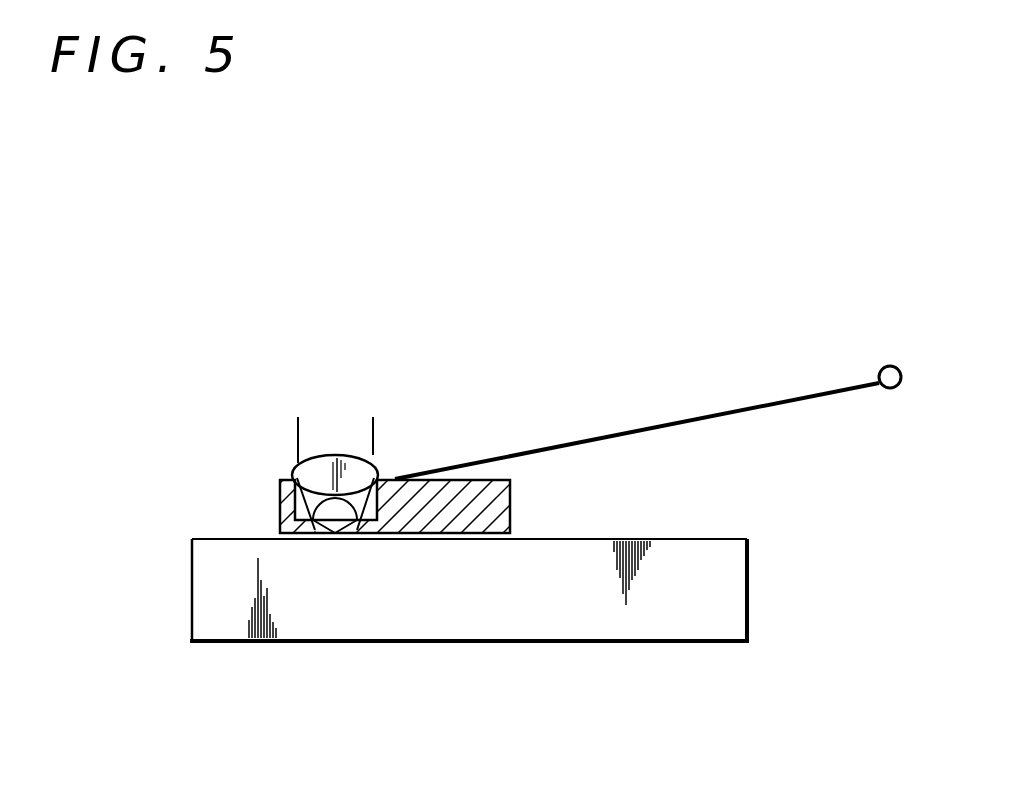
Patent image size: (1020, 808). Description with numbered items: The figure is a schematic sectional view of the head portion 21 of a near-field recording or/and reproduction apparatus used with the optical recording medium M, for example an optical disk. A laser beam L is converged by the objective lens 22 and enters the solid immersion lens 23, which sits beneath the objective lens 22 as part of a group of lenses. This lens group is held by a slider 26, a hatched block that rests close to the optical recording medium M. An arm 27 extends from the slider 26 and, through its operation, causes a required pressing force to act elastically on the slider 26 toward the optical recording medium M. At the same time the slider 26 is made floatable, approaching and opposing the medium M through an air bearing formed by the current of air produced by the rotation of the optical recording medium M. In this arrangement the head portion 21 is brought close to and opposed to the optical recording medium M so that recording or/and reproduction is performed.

The head portion 21 is at (475, 349).
The objective lens 22 is at (338, 457).
The solid immersion lens 23 is at (315, 533).
The slider 26 is at (512, 506).
The arm 27 is at (730, 407).
The laser beam L is at (373, 437).
The optical recording medium M is at (748, 593).